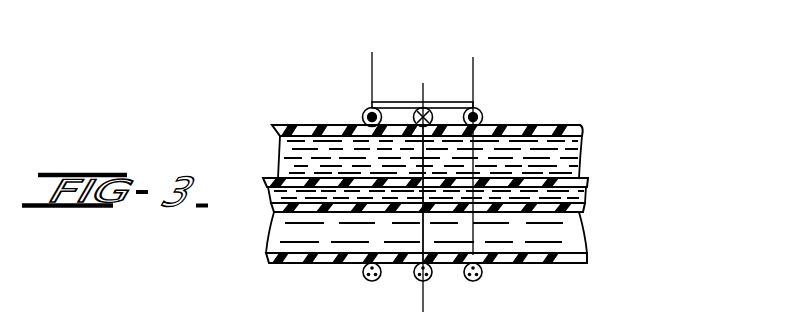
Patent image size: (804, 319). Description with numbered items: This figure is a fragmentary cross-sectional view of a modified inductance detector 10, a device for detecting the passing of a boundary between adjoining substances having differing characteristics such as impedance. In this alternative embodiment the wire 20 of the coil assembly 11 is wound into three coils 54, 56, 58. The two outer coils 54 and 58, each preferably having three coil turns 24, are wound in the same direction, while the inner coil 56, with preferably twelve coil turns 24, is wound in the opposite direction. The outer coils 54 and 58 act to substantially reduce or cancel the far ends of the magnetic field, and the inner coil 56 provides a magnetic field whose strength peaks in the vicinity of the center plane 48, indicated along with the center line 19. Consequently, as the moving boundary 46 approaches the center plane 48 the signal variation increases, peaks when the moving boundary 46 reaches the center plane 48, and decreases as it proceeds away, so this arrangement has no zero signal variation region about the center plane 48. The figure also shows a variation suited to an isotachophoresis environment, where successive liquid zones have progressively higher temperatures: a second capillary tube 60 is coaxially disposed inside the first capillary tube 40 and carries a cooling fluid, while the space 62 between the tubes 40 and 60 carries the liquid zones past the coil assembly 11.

The inductance detector 10 is at (598, 124).
The coil assembly 11 is at (408, 103).
The center line 19 is at (445, 197).
The wire 20 is at (372, 67).
The coil turns 24 is at (415, 278).
The first capillary tube 40 is at (555, 126).
The moving boundary 46 is at (475, 241).
The center plane 48 is at (428, 152).
The outer coil 54 is at (364, 111).
The inner coil 56 is at (426, 107).
The outer coil 58 is at (482, 111).
The second capillary tube 60 is at (275, 178).
The space 62 is at (586, 150).